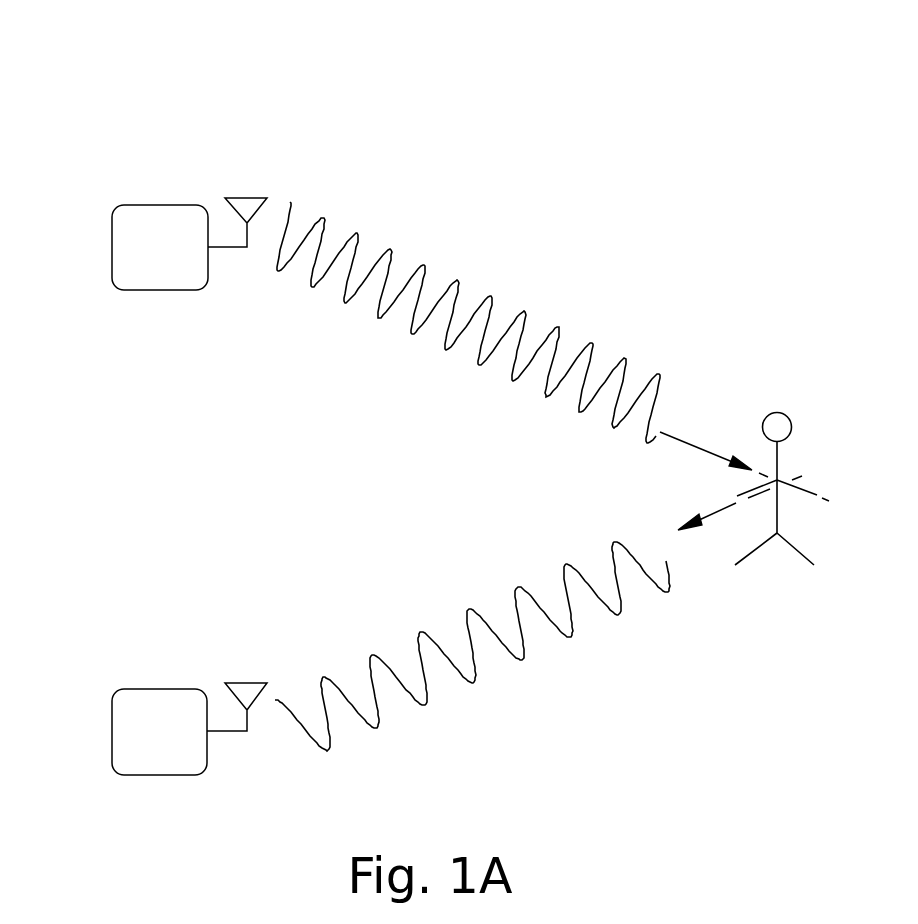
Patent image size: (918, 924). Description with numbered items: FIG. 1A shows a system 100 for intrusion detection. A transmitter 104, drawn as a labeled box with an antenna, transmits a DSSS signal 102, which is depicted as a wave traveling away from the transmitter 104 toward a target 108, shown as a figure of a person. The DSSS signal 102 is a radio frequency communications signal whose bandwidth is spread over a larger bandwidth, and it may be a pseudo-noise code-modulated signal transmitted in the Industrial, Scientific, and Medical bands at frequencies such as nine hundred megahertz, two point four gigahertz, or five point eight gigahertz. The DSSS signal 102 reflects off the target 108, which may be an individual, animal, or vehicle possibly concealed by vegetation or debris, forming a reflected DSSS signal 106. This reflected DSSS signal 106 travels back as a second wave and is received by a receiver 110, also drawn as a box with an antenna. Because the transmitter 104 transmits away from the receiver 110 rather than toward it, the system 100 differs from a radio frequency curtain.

The system 100 is at (169, 66).
The DSSS signal 102 is at (490, 298).
The transmitter 104 is at (112, 233).
The reflected DSSS signal 106 is at (517, 657).
The target 108 is at (792, 424).
The receiver 110 is at (112, 721).